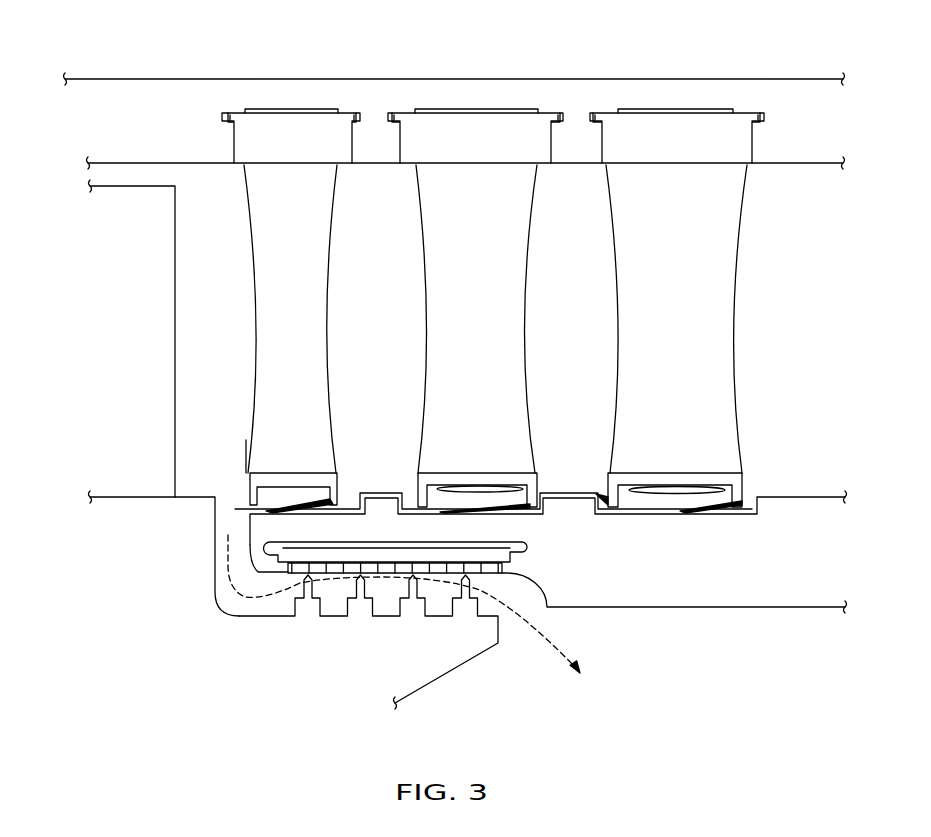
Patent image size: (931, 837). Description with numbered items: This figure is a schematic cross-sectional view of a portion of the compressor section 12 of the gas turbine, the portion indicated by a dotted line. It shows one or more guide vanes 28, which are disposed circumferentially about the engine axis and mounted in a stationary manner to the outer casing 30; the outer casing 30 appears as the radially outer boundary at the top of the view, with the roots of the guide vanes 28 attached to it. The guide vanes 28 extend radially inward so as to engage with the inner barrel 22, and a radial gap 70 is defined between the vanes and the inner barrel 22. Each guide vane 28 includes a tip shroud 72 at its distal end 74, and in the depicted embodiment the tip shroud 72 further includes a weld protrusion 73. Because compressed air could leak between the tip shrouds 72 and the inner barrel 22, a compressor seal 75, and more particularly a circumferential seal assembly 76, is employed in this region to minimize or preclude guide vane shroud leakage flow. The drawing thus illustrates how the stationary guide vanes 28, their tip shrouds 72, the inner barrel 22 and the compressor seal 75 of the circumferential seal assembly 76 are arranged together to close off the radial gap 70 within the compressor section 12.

The compressor section 12 is at (137, 52).
The outer casing 30 is at (712, 78).
The guide vanes 28 is at (528, 300).
The tip shroud 72 is at (339, 471).
The weld protrusion 73 is at (657, 483).
The distal end 74 is at (247, 464).
The radial gap 70 is at (604, 500).
The compressor seal 75 is at (509, 533).
The circumferential seal assembly 76 is at (505, 515).
The inner barrel 22 is at (775, 608).